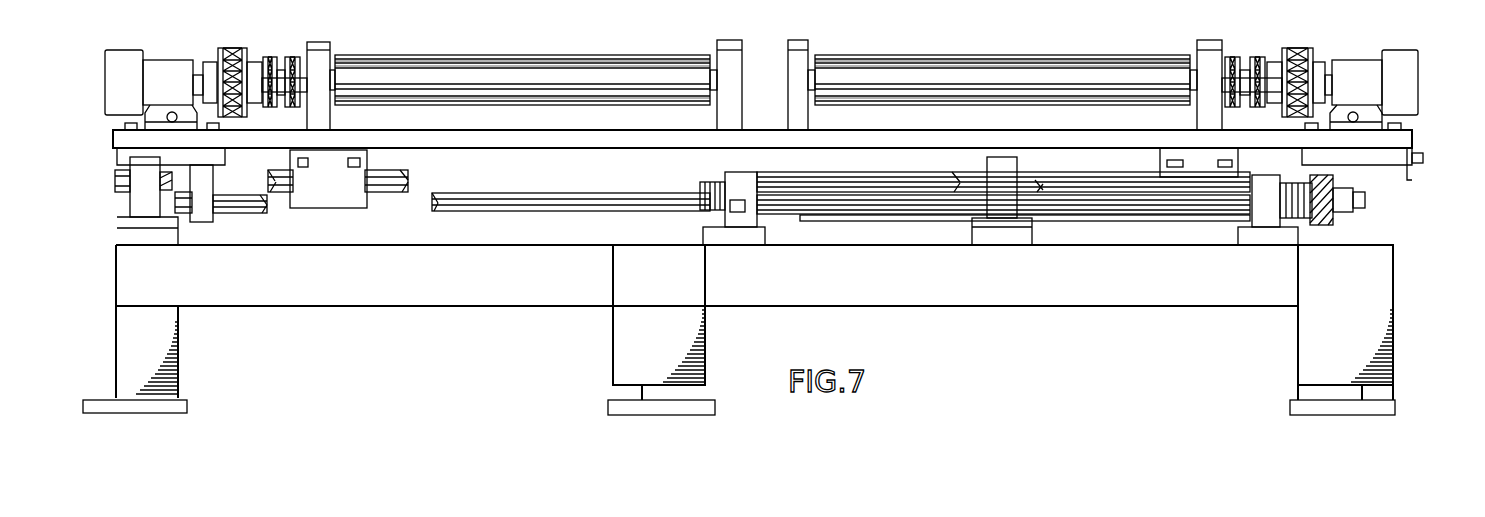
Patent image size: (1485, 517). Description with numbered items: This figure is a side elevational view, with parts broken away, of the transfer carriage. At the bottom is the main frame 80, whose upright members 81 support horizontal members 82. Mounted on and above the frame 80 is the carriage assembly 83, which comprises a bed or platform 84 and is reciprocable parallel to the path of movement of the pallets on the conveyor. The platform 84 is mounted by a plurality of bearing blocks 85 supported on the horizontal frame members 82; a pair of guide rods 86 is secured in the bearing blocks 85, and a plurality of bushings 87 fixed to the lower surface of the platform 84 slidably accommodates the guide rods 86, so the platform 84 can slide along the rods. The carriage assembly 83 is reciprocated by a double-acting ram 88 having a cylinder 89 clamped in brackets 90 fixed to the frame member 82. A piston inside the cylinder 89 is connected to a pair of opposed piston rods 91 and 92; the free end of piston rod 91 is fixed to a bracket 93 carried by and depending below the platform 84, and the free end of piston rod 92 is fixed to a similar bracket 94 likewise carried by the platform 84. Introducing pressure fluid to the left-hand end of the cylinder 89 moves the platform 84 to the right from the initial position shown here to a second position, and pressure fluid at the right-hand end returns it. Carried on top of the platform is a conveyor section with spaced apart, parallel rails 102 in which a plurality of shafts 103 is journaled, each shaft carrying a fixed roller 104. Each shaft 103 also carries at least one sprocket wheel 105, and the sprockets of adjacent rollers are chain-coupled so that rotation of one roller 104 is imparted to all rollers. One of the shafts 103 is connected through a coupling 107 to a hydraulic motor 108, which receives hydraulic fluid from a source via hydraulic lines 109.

The main frame 80 is at (1402, 277).
The upright members 81 is at (178, 340).
The horizontal members 82 is at (497, 300).
The carriage assembly 83 is at (1302, 27).
The platform 84 is at (556, 144).
The bearing blocks 85 is at (140, 197).
The guide rods 86 is at (388, 172).
The bushings 87 is at (334, 195).
The double-acting ram 88 is at (903, 238).
The cylinder 89 is at (840, 216).
The brackets 90 is at (735, 177).
The piston rod 91 is at (612, 197).
The piston rod 92 is at (1302, 214).
The bracket 93 is at (205, 215).
The bracket 94 is at (1340, 185).
The rails 102 is at (321, 63).
The shafts 103 is at (716, 76).
The roller 104 is at (574, 70).
The sprocket wheel 105 is at (292, 57).
The coupling 107 is at (252, 58).
The hydraulic motor 108 is at (161, 66).
The hydraulic lines 109 is at (171, 112).